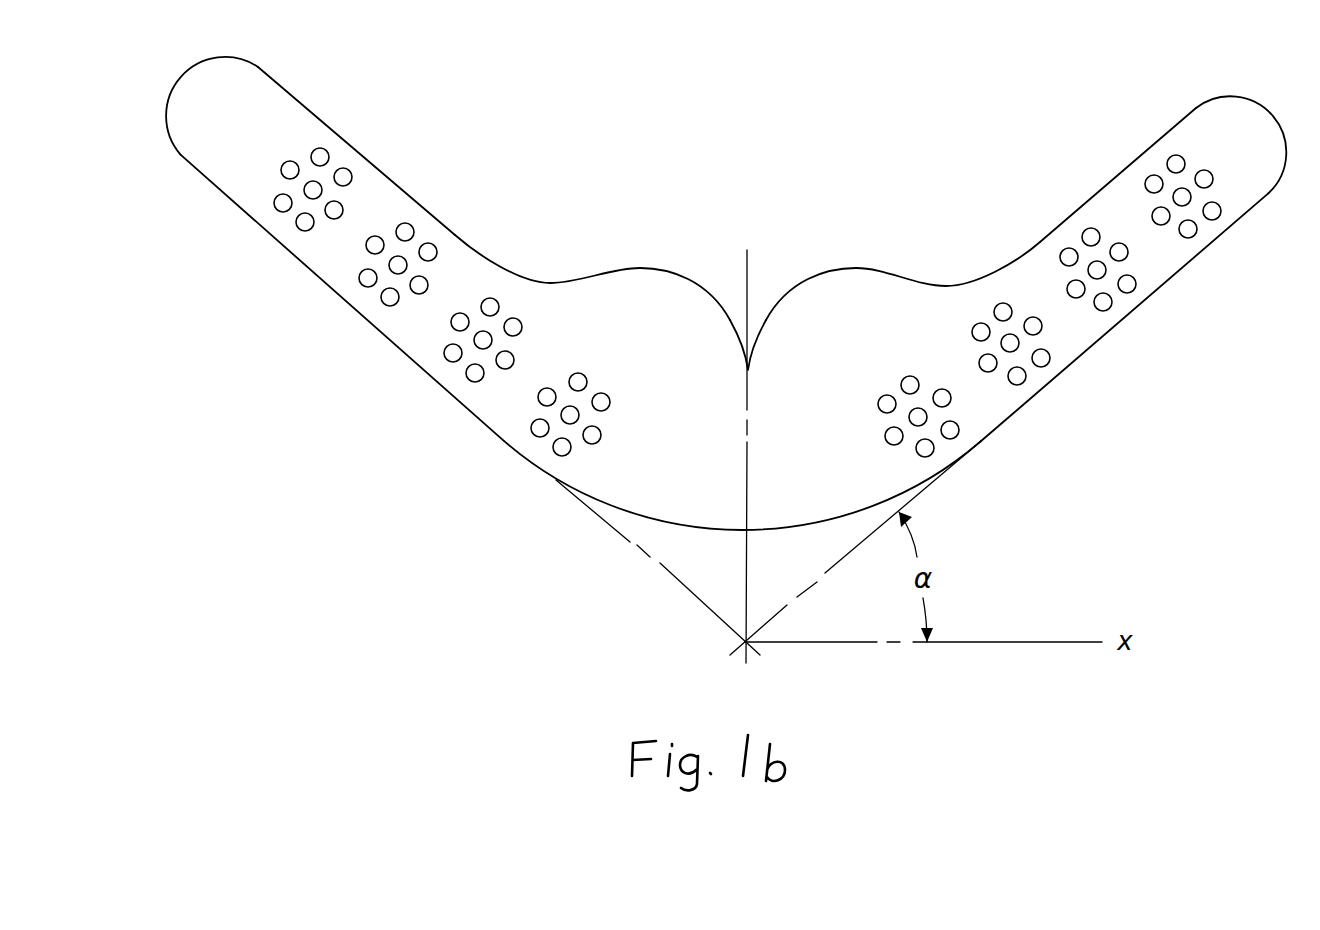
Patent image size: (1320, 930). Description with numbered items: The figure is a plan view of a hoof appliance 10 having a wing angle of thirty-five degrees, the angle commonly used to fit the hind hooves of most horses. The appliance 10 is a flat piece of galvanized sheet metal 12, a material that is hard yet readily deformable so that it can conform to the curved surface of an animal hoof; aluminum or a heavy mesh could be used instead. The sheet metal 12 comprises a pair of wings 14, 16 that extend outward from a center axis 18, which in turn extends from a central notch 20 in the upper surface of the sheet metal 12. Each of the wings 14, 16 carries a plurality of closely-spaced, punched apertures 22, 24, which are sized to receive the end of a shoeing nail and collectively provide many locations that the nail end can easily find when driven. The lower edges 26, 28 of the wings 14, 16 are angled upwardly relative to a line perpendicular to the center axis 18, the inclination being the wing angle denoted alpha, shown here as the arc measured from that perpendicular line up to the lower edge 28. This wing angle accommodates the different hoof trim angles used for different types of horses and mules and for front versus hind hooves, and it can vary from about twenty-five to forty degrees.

The appliance 10 is at (893, 217).
The galvanized sheet metal 12 is at (608, 287).
The wing 14 is at (262, 75).
The wing 16 is at (1212, 115).
The center axis 18 is at (755, 252).
The central notch 20 is at (757, 370).
The punched apertures 22 is at (357, 253).
The punched apertures 24 is at (947, 452).
The lower edge 26 is at (472, 408).
The lower edge 28 is at (1178, 270).